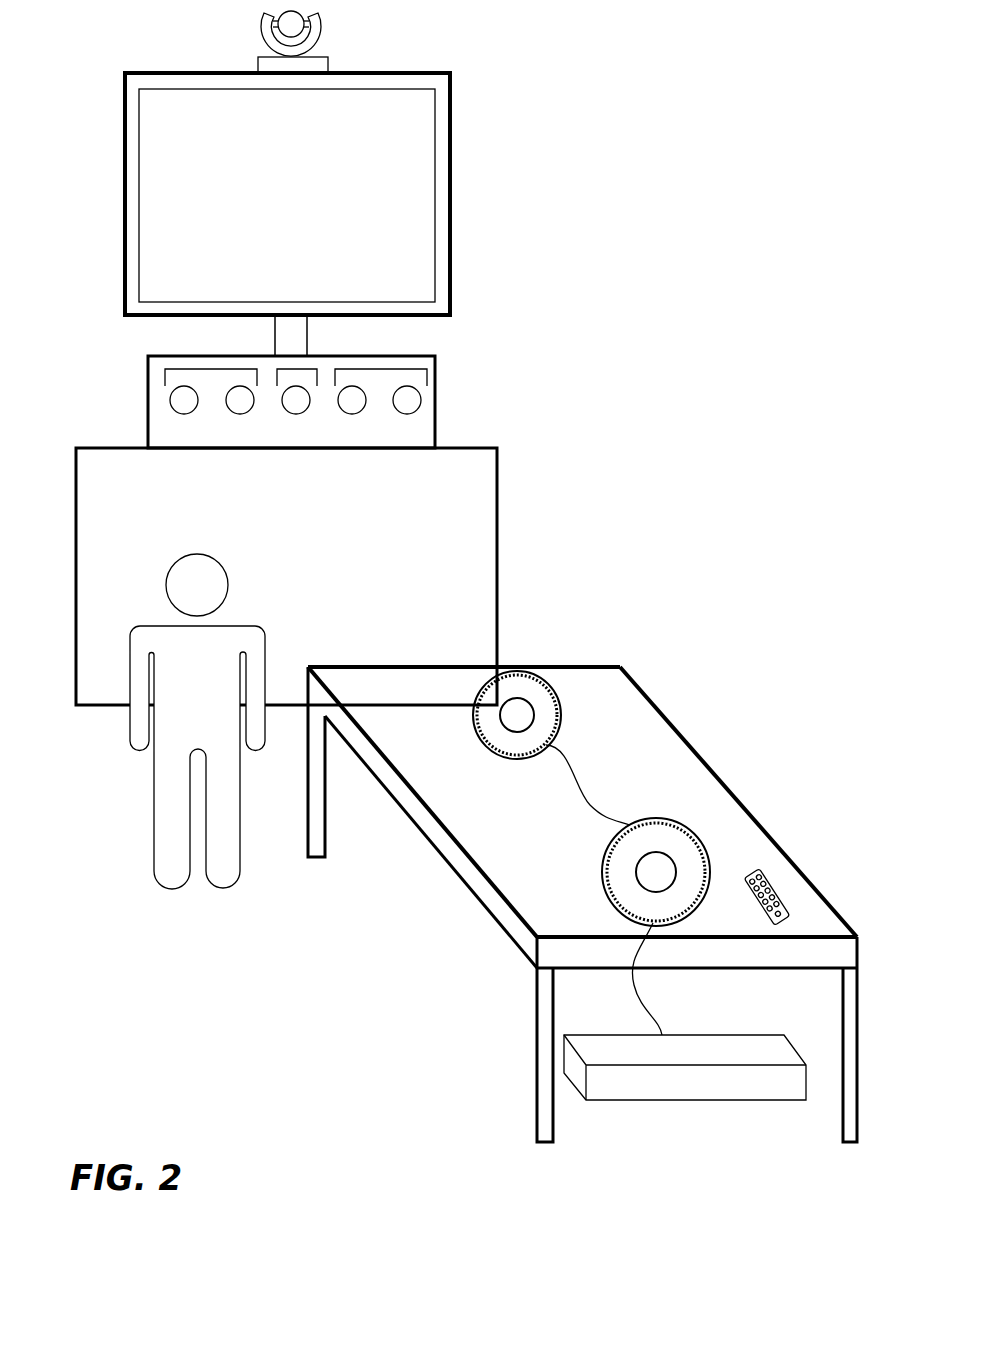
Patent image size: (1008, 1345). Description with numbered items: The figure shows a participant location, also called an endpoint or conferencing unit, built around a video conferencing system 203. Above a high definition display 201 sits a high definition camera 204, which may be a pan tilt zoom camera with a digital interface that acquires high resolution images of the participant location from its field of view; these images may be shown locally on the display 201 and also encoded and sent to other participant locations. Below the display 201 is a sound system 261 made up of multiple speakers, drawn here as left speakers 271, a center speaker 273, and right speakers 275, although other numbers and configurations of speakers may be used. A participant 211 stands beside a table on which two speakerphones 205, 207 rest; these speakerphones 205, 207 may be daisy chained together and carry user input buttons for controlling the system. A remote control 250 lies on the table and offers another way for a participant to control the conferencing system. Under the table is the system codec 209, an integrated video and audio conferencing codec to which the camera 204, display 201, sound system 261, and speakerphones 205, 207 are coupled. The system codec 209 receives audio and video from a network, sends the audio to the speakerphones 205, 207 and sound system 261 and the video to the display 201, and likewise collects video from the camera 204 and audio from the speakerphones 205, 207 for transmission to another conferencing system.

The display 201 is at (370, 175).
The video conferencing system 203 is at (786, 195).
The high definition camera 204 is at (323, 30).
The speakerphone 205 is at (623, 860).
The speakerphone 207 is at (517, 687).
The system codec 209 is at (671, 1084).
The user 211 is at (171, 858).
The remote control 250 is at (778, 895).
The sound system 261 is at (435, 395).
The left speakers 271 is at (197, 369).
The center speaker 273 is at (300, 368).
The right speakers 275 is at (407, 369).